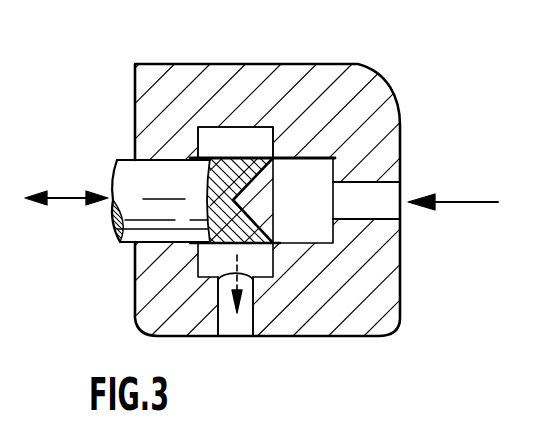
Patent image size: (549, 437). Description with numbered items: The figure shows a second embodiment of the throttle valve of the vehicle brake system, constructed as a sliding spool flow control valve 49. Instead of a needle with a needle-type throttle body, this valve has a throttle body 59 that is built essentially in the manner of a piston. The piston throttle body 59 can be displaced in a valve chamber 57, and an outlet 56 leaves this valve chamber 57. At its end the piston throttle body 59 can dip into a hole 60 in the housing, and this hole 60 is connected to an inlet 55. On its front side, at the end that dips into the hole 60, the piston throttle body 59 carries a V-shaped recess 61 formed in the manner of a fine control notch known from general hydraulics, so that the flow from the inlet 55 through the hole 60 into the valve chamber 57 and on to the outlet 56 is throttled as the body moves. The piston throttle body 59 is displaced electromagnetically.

The sliding spool flow control valve 49 is at (416, 224).
The inlet 55 is at (388, 214).
The outlet 56 is at (237, 337).
The valve chamber 57 is at (233, 137).
The throttle body 59 is at (125, 170).
The hole 60 is at (337, 173).
The V-shaped recess 61 is at (262, 183).